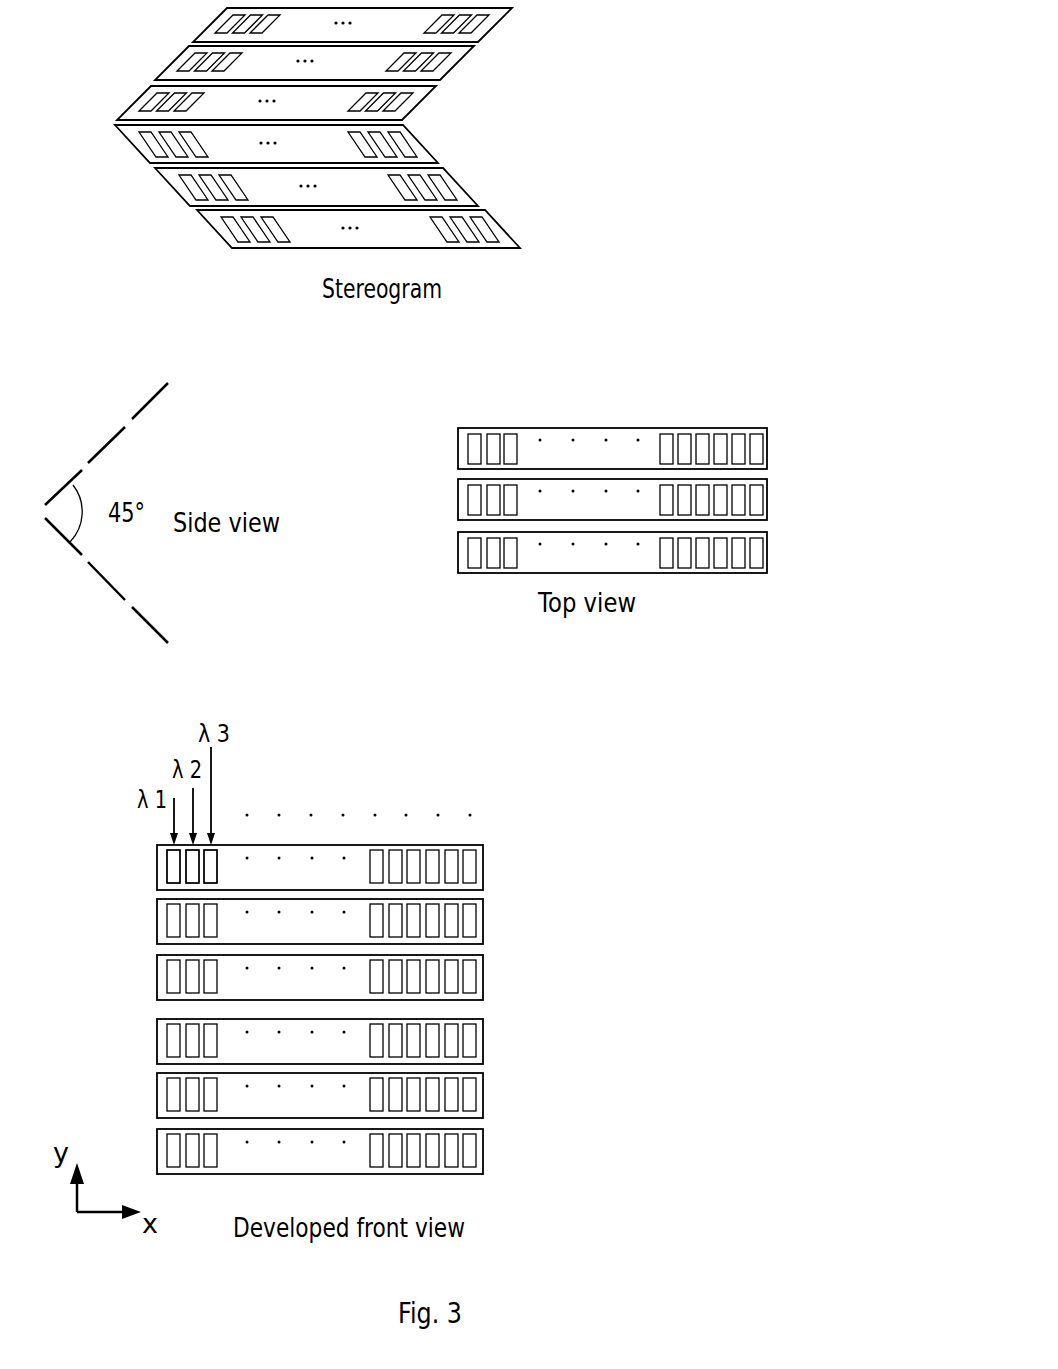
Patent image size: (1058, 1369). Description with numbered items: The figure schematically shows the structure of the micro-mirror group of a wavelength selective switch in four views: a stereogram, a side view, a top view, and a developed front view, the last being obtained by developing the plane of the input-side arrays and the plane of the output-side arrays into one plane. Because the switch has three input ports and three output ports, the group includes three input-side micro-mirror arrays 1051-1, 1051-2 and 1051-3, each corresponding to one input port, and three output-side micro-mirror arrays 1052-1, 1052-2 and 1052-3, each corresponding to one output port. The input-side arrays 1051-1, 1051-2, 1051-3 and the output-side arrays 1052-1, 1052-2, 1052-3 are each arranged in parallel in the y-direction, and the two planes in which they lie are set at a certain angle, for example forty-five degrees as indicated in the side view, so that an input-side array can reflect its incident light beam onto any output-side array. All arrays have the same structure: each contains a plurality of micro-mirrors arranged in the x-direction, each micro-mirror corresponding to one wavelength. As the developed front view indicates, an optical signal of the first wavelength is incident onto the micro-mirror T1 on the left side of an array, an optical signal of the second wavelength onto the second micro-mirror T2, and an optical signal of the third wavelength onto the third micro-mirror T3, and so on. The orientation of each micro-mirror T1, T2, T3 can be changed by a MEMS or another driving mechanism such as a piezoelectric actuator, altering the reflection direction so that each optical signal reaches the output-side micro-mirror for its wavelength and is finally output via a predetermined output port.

The input-side micro-mirror array 1051-1 is at (476, 449).
The input-side micro-mirror array 1051-2 is at (475, 495).
The input-side micro-mirror array 1051-3 is at (456, 543).
The output-side micro-mirror array 1052-1 is at (455, 594).
The output-side micro-mirror array 1052-2 is at (475, 642).
The output-side micro-mirror array 1052-3 is at (476, 692).
The micro-mirror T1 is at (172, 877).
The second micro-mirror T2 is at (190, 865).
The third micro-mirror T3 is at (212, 859).